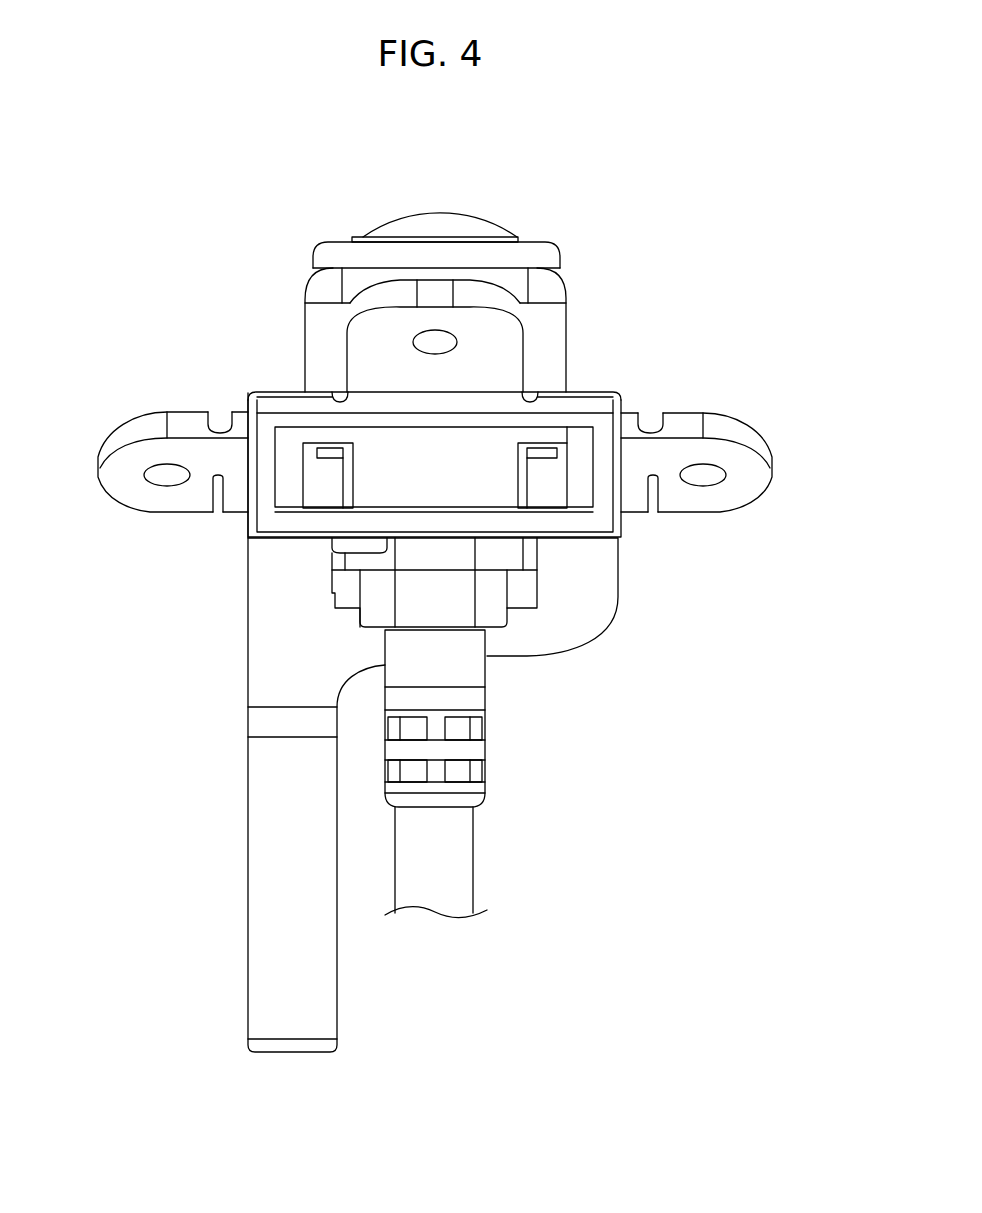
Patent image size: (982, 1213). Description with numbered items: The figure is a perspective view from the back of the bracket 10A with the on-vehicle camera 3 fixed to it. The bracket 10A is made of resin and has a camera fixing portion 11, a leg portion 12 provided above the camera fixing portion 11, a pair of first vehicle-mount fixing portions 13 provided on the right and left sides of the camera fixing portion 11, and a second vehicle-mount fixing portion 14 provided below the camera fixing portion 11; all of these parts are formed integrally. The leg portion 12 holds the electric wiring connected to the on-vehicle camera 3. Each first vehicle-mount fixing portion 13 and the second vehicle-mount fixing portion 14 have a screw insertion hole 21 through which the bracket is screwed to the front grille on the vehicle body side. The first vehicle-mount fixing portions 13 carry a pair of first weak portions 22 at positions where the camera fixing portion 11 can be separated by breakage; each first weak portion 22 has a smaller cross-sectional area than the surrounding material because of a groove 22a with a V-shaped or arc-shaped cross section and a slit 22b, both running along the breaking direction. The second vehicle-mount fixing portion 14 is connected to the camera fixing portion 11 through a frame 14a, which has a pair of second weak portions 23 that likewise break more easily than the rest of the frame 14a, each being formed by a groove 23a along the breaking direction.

The bracket 10A is at (209, 246).
The on-vehicle camera 3 is at (427, 253).
The second vehicle-mount fixing portion 14 is at (487, 330).
The groove 23a is at (337, 387).
The second weak portion 23 is at (331, 381).
The frame 14a is at (285, 407).
The first vehicle-mount fixing portion 13 is at (435, 439).
The first weak portion 22 is at (435, 407).
The groove 22a is at (220, 423).
The slit 22b is at (219, 474).
The screw insertion hole 21 is at (430, 343).
The camera fixing portion 11 is at (290, 548).
The leg portion 12 is at (257, 865).